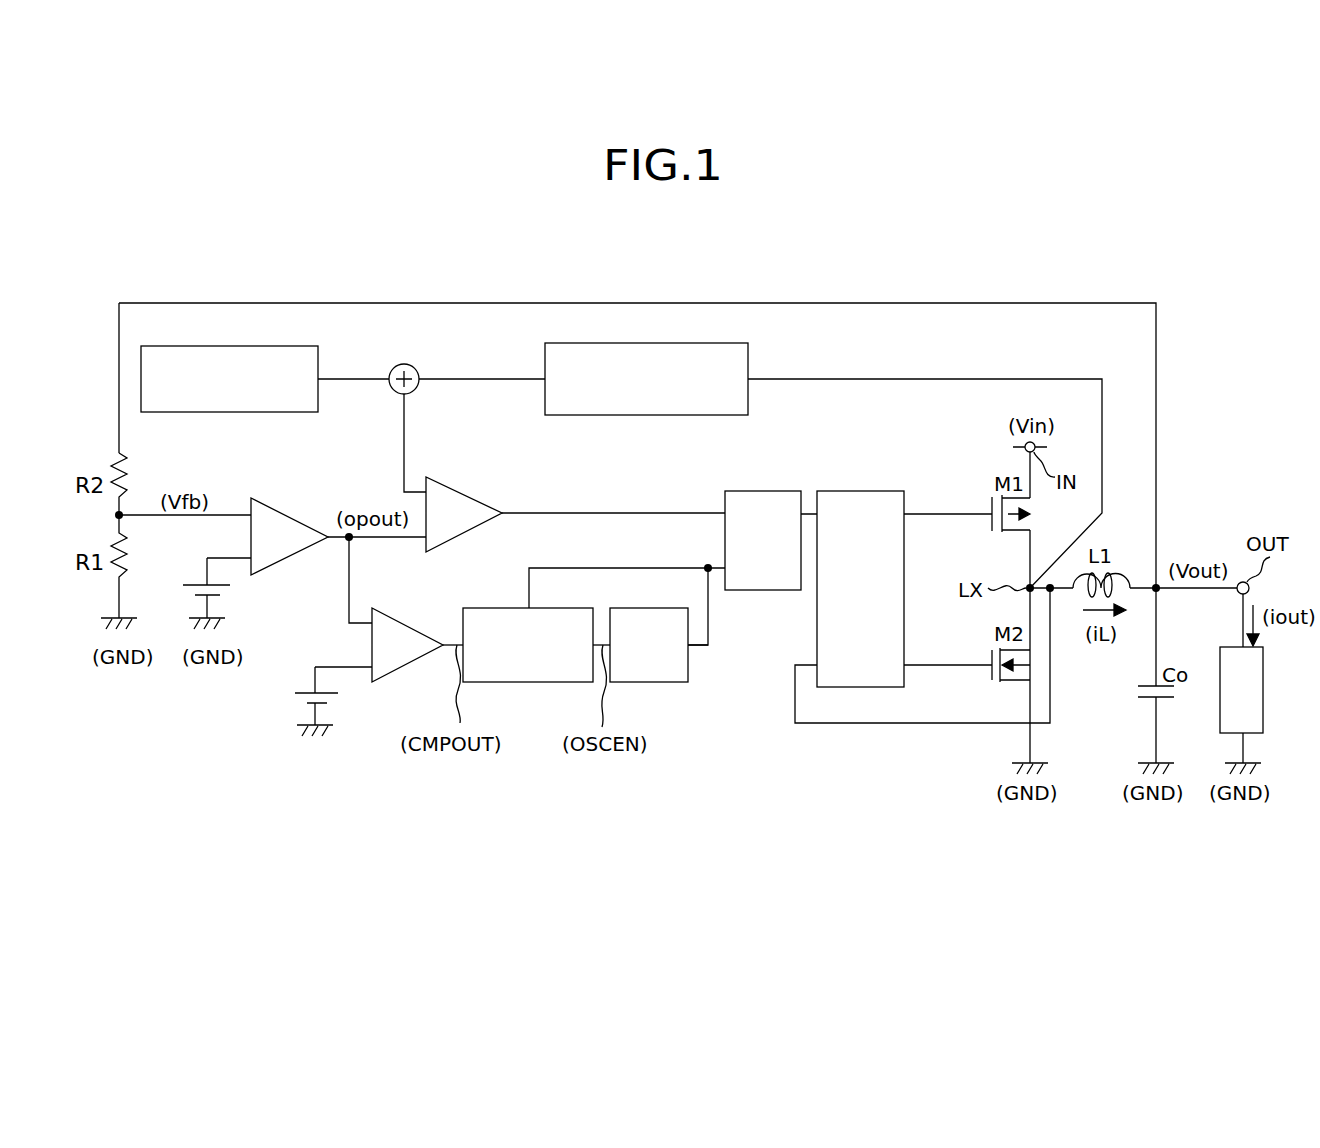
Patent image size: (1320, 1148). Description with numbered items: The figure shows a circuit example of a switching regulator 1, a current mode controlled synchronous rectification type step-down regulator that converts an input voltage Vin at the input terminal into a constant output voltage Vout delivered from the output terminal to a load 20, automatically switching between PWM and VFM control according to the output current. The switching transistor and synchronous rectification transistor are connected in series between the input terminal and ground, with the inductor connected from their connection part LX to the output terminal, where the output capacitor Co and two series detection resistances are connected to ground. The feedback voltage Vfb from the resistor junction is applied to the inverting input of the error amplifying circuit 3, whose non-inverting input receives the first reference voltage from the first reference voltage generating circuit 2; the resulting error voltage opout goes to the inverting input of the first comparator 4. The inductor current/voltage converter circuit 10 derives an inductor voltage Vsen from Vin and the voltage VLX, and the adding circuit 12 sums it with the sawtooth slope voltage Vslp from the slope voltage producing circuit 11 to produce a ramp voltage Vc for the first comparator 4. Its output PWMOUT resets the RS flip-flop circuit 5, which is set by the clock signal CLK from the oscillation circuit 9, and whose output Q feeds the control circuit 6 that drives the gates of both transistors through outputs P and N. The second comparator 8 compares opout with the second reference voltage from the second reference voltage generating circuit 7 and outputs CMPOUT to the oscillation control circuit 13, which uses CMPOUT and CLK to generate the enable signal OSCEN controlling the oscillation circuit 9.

The switching regulator 1 is at (998, 274).
The first reference voltage generating circuit 2 is at (228, 592).
The error amplifying circuit 3 is at (283, 520).
The first comparator 4 is at (462, 492).
The RS flip-flop circuit 5 is at (763, 491).
The control circuit 6 is at (860, 491).
The second reference voltage generating circuit 7 is at (295, 700).
The second comparator 8 is at (405, 613).
The oscillation circuit 9 is at (652, 682).
The inductor current/voltage converter circuit 10 is at (630, 415).
The slope voltage producing circuit 11 is at (228, 412).
The adding circuit 12 is at (394, 391).
The oscillation control circuit 13 is at (497, 608).
The load 20 is at (1263, 690).